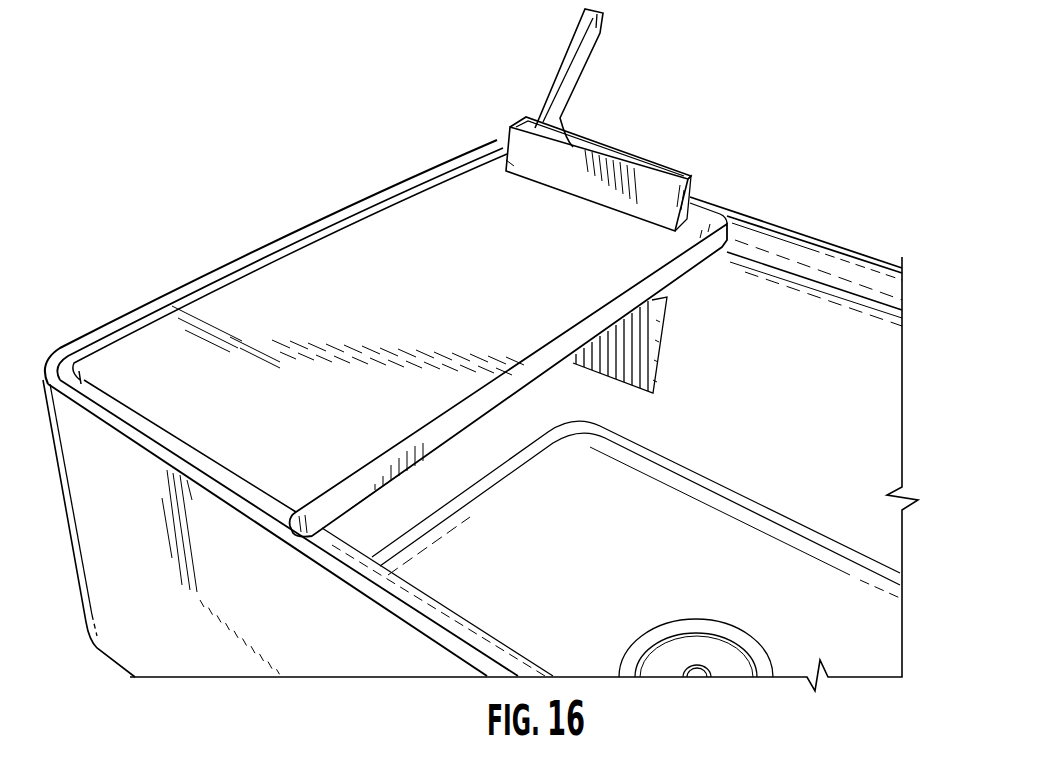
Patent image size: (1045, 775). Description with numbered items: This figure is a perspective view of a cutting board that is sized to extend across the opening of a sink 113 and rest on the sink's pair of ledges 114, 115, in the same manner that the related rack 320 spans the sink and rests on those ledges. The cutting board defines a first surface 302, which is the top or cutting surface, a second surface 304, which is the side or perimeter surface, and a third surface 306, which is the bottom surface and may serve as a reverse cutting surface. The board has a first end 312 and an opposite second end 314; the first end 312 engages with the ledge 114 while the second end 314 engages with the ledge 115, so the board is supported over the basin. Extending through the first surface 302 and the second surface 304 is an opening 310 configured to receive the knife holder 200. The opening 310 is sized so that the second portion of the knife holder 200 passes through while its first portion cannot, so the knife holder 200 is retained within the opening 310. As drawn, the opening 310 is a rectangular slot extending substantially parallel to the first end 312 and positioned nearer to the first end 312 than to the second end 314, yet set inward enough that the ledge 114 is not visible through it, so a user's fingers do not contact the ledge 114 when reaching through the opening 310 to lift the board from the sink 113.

The rack 320 is at (246, 142).
The sink 113 is at (180, 278).
The ledge 114 is at (833, 270).
The ledge 115 is at (337, 550).
The knife holder 200 is at (625, 130).
The first surface 302 is at (403, 213).
The second surface 304 is at (697, 263).
The third surface 306 is at (372, 498).
The opening 310 is at (522, 173).
The first end 312 is at (718, 198).
The second end 314 is at (104, 393).